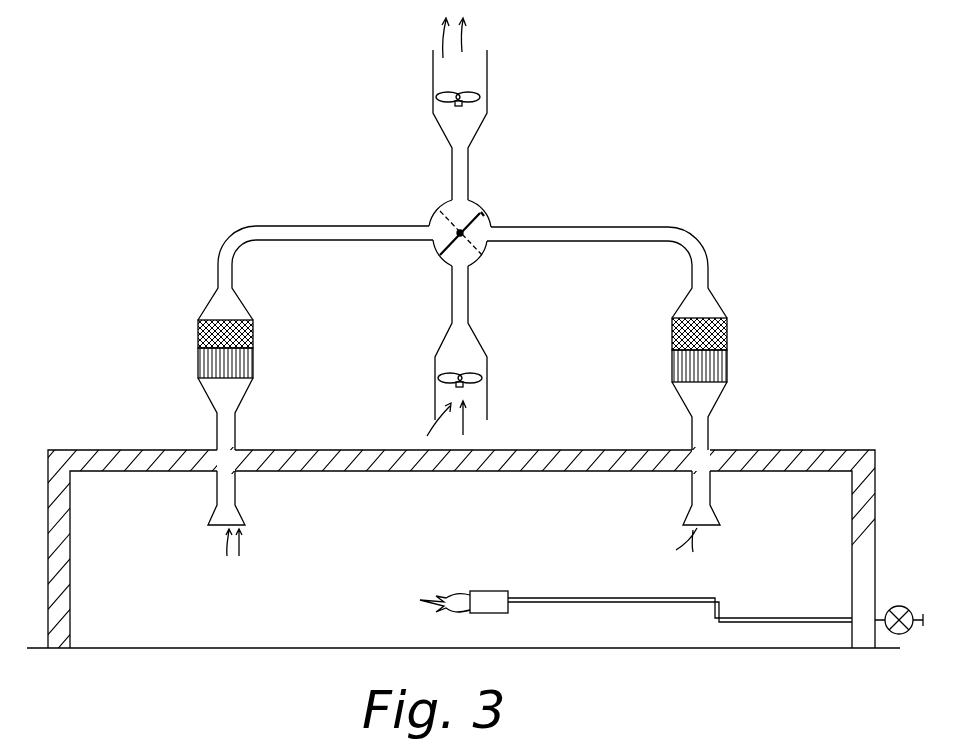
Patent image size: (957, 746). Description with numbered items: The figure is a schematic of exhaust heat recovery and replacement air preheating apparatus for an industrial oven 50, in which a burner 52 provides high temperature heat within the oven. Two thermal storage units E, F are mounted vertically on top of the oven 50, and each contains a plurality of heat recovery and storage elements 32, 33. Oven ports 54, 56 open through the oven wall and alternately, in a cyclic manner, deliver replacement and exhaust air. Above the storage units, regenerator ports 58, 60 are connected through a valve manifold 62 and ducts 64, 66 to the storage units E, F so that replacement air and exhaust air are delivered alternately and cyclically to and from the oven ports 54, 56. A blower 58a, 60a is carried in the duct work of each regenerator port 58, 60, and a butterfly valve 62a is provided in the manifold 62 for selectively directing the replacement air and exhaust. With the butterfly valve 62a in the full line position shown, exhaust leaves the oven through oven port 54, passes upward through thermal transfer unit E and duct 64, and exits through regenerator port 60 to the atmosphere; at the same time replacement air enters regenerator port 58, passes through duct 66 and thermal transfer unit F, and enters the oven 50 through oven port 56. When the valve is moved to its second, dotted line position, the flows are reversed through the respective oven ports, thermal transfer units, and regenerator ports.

The industrial oven 50 is at (48, 470).
The burner 52 is at (486, 591).
The oven port 54 is at (214, 526).
The oven port 56 is at (712, 528).
The regenerator port 58 is at (484, 420).
The blower 58a is at (472, 373).
The regenerator port 60 is at (478, 40).
The blower 60a is at (480, 102).
The valve manifold 62 is at (430, 212).
The butterfly valve 62a is at (490, 216).
The duct 64 is at (228, 238).
The duct 66 is at (696, 238).
The heat recovery and storage element 33 is at (198, 329).
The heat recovery and storage element 32 is at (205, 360).
The thermal storage unit E is at (253, 338).
The thermal storage unit F is at (727, 335).